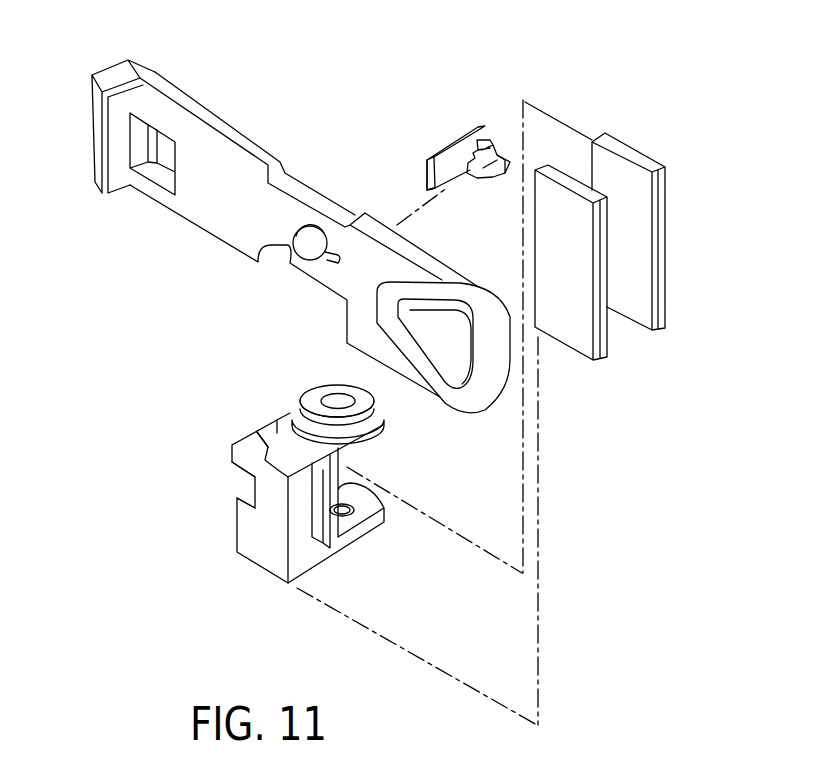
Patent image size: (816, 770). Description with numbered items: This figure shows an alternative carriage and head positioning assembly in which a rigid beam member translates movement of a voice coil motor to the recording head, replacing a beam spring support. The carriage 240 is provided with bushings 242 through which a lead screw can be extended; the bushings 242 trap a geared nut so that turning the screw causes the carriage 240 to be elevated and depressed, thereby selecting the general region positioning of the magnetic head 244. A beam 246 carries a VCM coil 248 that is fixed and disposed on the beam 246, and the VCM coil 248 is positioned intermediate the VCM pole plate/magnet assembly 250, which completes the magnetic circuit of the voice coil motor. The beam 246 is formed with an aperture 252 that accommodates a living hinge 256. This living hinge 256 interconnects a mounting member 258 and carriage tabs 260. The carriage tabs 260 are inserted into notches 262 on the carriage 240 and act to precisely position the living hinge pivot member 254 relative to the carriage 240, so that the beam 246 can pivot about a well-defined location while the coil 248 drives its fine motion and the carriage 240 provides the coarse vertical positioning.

The carriage 240 is at (260, 555).
The bushings 242 is at (323, 397).
The magnetic head 244 is at (120, 72).
The beam 246 is at (193, 208).
The VCM coil 248 is at (487, 377).
The VCM pole plate/magnet assembly 250 is at (653, 330).
The aperture 252 is at (292, 230).
The living hinge pivot member 254 is at (447, 143).
The living hinge 256 is at (477, 137).
The mounting member 258 is at (497, 153).
The carriage tabs 260 is at (427, 168).
The notches 262 is at (245, 495).